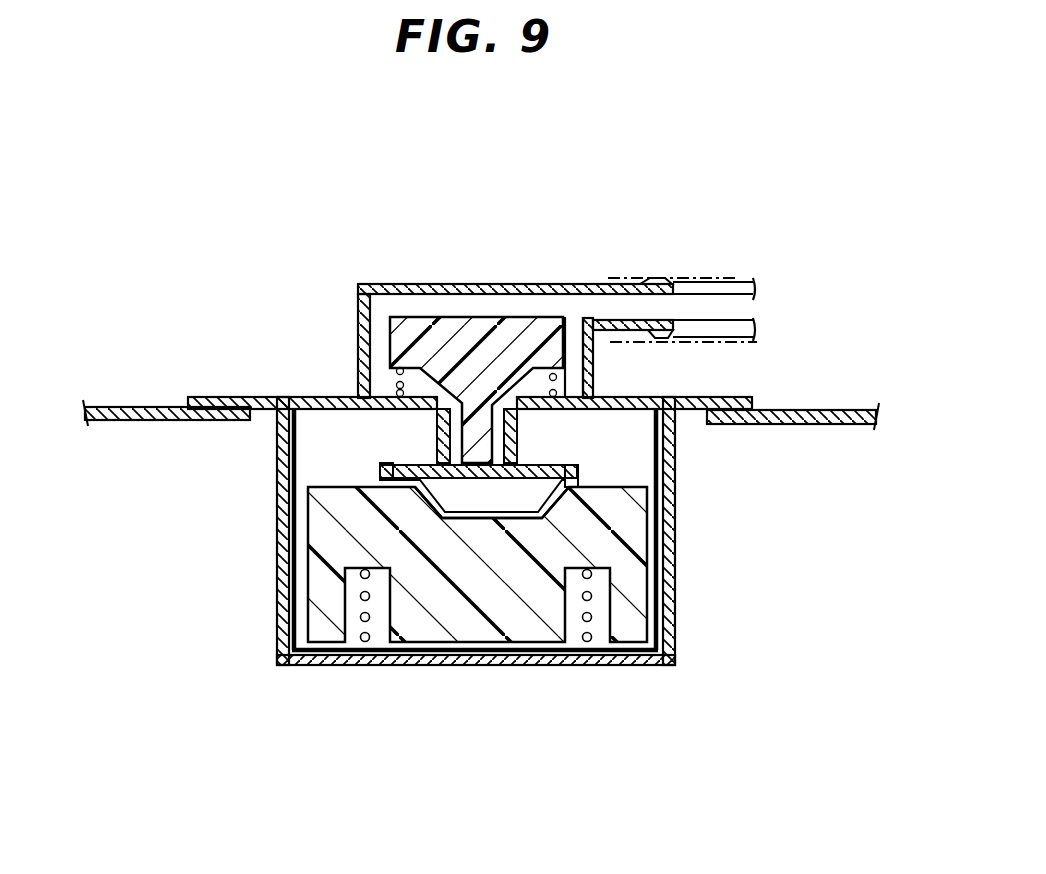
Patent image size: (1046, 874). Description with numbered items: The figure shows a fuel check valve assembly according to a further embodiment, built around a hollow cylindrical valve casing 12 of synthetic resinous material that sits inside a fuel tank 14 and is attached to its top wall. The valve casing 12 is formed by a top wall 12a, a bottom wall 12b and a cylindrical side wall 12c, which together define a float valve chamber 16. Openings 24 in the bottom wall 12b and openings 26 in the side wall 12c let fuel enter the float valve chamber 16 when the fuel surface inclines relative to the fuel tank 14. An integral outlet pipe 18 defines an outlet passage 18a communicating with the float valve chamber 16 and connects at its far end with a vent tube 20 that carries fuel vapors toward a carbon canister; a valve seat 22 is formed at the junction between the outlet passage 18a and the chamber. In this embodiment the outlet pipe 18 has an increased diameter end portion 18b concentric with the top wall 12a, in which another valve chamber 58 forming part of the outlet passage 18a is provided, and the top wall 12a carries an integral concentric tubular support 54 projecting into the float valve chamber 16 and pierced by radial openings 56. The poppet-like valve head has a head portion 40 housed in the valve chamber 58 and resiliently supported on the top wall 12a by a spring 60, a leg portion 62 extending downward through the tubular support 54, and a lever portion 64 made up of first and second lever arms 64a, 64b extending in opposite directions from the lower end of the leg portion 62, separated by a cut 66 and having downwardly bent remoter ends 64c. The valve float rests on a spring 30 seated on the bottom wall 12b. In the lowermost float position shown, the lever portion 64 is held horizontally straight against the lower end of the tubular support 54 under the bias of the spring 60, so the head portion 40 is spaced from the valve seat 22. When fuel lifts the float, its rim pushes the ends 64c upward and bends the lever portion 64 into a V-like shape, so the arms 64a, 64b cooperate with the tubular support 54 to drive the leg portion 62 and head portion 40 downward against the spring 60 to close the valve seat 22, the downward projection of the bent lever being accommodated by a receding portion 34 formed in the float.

The valve casing 12 is at (686, 582).
The top wall 12a is at (290, 397).
The bottom wall 12b is at (615, 665).
The side wall 12c is at (285, 617).
The fuel tank 14 is at (812, 410).
The float valve chamber 16 is at (280, 420).
The outlet pipe 18 is at (657, 282).
The outlet passage 18a is at (588, 290).
The increased diameter end portion 18b is at (358, 305).
The vent tube 20 is at (718, 277).
The valve seat 22 is at (452, 440).
The openings 24 is at (477, 655).
The openings 26 is at (676, 432).
The spring 30 is at (382, 645).
The receding portion 34 is at (437, 500).
The head portion 40 is at (396, 370).
The tubular support 54 is at (518, 420).
The radial openings 56 is at (505, 447).
The valve chamber 58 is at (372, 284).
The spring 60 is at (557, 375).
The leg portion 62 is at (437, 422).
The lever portion 64 is at (404, 458).
The first lever arm 64a is at (444, 482).
The second lever arm 64b is at (555, 500).
The downwardly bent remoter ends 64c is at (560, 472).
The cut 66 is at (560, 520).